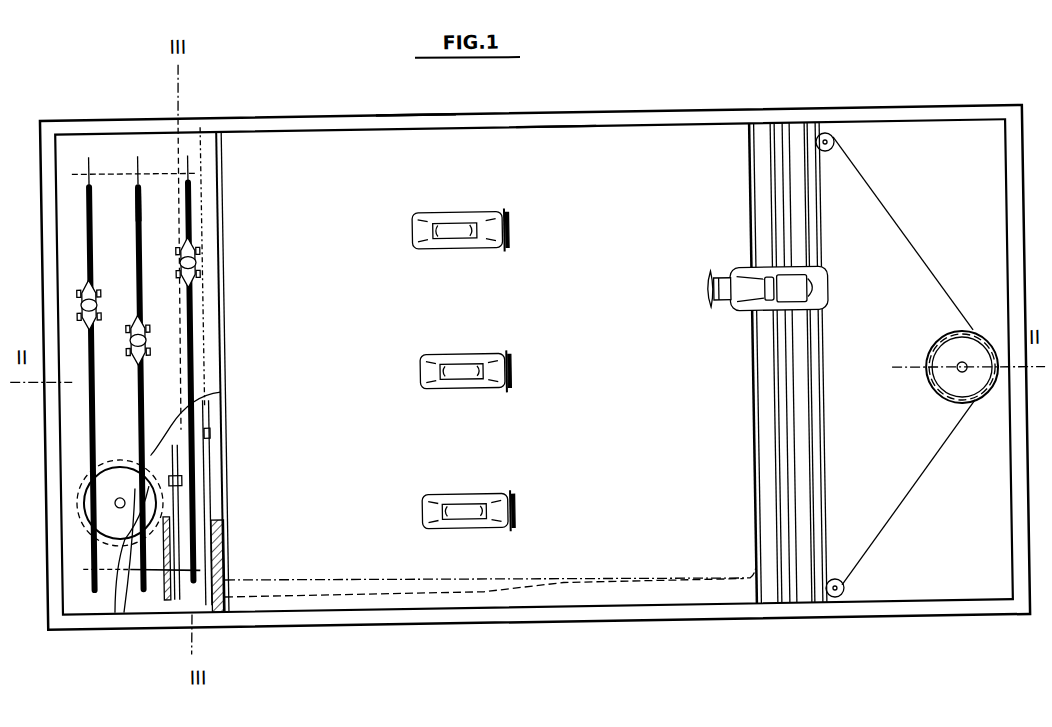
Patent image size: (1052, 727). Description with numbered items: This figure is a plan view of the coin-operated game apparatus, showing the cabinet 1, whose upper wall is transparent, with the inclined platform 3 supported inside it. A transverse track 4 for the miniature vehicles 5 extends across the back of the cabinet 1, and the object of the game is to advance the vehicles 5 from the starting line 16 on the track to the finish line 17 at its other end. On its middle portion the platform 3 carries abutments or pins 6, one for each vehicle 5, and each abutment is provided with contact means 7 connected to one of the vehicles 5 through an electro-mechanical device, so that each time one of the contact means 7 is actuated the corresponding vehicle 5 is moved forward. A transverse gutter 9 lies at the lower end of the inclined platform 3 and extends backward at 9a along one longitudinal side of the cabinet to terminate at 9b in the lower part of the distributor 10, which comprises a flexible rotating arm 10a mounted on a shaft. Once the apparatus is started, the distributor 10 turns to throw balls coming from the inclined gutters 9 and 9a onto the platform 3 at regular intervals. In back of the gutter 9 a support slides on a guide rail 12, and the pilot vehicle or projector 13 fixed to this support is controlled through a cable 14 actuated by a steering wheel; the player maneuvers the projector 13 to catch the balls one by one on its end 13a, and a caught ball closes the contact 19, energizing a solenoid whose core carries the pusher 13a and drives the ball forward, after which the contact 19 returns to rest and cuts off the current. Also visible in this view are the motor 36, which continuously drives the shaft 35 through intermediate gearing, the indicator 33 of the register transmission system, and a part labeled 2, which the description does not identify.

The cabinet 1 is at (1023, 461).
The top wall 2 is at (434, 168).
The inclined platform 3 is at (544, 158).
The transverse track 4 is at (74, 226).
The miniature vehicles 5 is at (88, 295).
The abutments or pins 6 is at (432, 220).
The contact means 7 is at (511, 229).
The transverse gutter 9 is at (758, 499).
The backward-extending gutter portion 9a is at (405, 596).
The gutter terminal end 9b is at (196, 591).
The distributor 10 is at (166, 594).
The flexible rotating arm 10a is at (175, 464).
The guide rail 12 is at (792, 361).
The pilot vehicle (projector) 13 is at (751, 279).
The pusher end of pilot vehicle 13a is at (712, 273).
The cable 14 is at (875, 551).
The starting line 16 is at (92, 545).
The finish line 17 is at (139, 189).
The contact 19 is at (708, 285).
The indicator 33 is at (207, 427).
The shaft 35 is at (80, 563).
The motor 36 is at (103, 504).